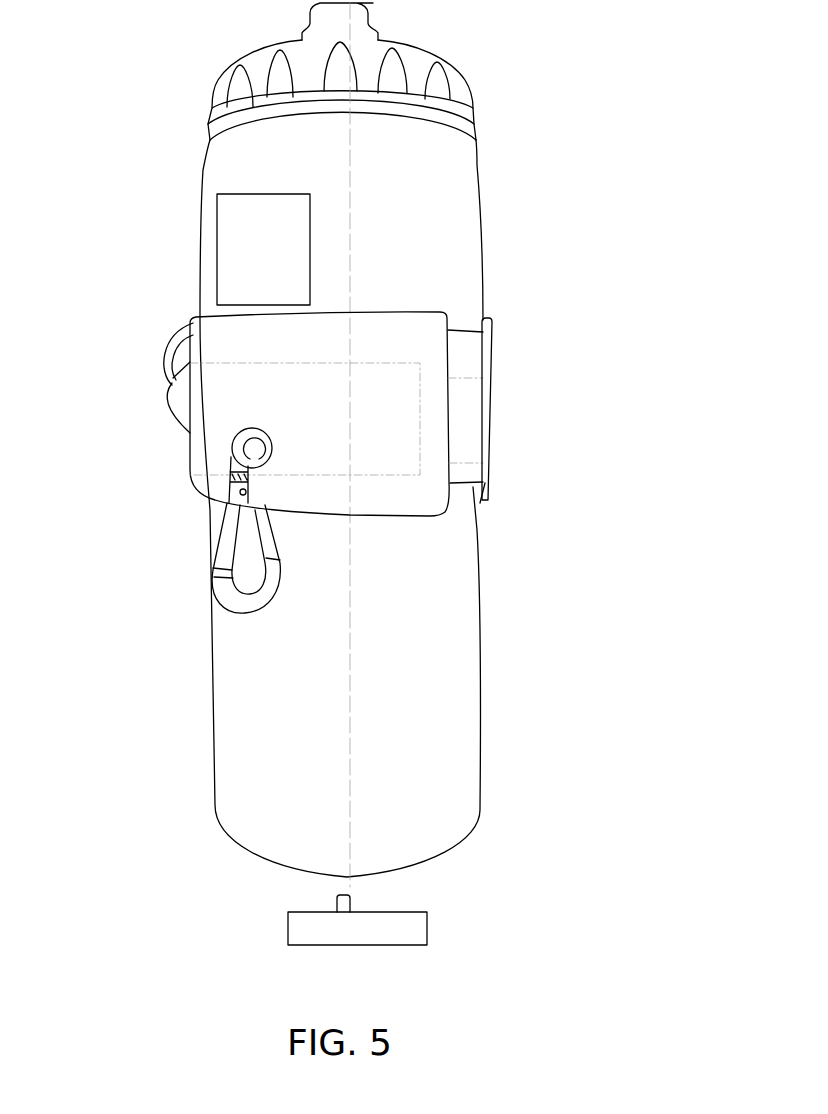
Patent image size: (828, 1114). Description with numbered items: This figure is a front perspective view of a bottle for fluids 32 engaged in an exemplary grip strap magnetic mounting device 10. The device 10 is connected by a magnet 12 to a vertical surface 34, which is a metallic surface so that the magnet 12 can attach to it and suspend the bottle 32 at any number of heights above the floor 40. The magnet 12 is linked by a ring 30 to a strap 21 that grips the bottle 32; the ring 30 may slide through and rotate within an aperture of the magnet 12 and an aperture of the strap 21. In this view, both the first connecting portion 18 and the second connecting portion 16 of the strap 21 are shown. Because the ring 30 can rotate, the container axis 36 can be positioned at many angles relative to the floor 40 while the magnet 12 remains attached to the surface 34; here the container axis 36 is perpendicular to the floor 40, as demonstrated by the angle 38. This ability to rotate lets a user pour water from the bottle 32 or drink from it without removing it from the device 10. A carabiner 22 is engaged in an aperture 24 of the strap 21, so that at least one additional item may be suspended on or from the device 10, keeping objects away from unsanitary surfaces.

The grip strap magnetic mounting device 10 is at (583, 413).
The magnet 12 is at (182, 403).
The second connecting portion 16 is at (390, 497).
The first connecting portion 18 is at (492, 378).
The strap 21 is at (540, 474).
The carabiner 22 is at (230, 593).
The aperture 24 is at (236, 444).
The ring 30 is at (166, 372).
The bottle for fluids 32 is at (225, 193).
The vertical surface 34 is at (143, 470).
The container axis 36 is at (322, 774).
The angle 38 is at (303, 891).
The floor 40 is at (288, 928).